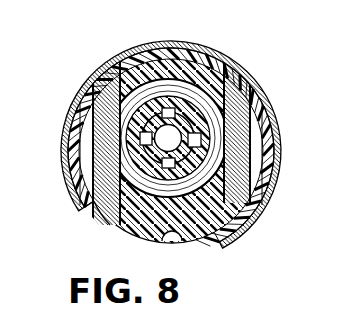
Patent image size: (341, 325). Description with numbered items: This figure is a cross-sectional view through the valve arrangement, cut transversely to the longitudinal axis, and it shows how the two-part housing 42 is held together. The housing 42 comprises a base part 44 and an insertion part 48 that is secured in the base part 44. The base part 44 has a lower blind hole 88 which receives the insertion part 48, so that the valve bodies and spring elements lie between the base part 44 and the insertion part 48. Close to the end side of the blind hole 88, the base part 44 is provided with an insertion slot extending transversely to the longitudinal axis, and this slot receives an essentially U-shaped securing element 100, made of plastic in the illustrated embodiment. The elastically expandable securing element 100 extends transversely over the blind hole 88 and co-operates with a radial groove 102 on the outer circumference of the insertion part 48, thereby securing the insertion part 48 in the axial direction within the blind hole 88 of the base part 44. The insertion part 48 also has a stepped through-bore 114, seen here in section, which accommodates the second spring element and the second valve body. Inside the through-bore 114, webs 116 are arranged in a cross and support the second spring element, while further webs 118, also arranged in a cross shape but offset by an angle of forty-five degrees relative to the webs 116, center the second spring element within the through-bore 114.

The housing 42 is at (58, 93).
The base part 44 is at (118, 223).
The insertion part 48 is at (197, 182).
The lower blind hole 88 is at (119, 230).
The securing element 100 is at (107, 70).
The radial groove 102 is at (214, 76).
The stepped through-bore 114 is at (118, 140).
The webs 116 is at (205, 136).
The further webs 118 is at (186, 62).